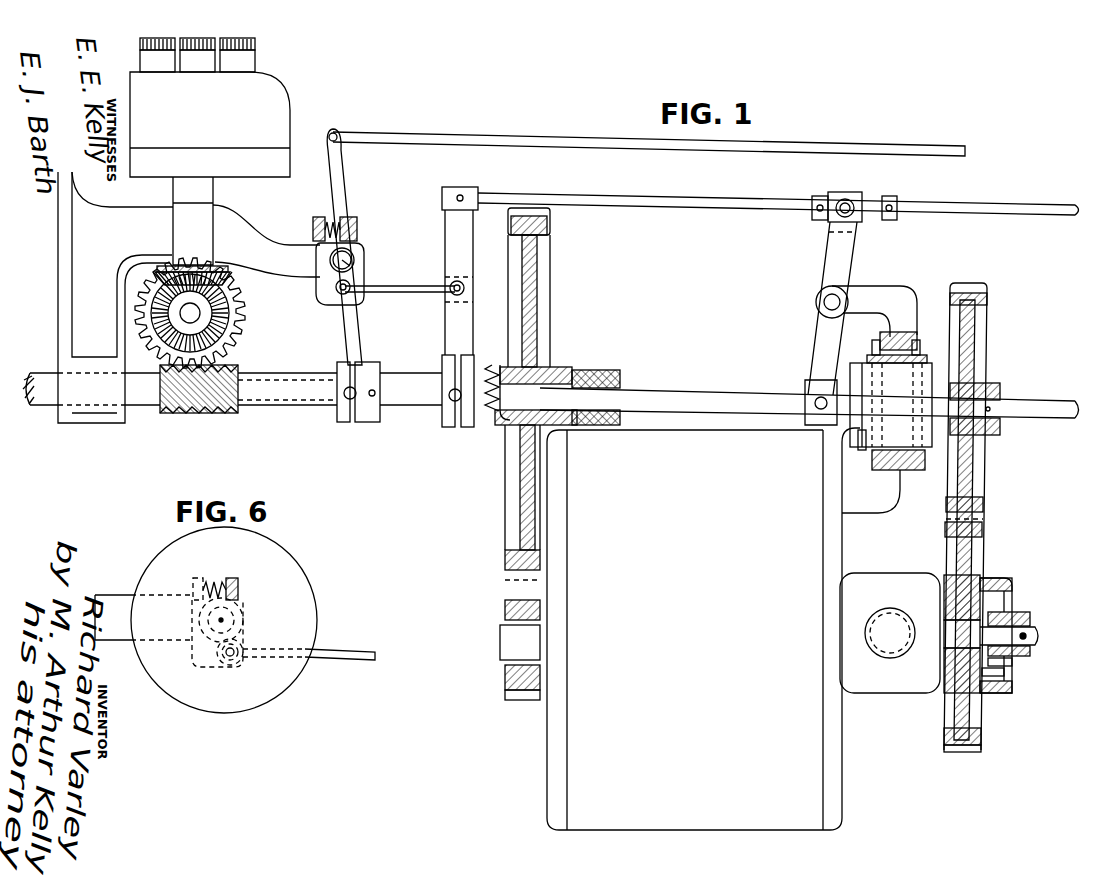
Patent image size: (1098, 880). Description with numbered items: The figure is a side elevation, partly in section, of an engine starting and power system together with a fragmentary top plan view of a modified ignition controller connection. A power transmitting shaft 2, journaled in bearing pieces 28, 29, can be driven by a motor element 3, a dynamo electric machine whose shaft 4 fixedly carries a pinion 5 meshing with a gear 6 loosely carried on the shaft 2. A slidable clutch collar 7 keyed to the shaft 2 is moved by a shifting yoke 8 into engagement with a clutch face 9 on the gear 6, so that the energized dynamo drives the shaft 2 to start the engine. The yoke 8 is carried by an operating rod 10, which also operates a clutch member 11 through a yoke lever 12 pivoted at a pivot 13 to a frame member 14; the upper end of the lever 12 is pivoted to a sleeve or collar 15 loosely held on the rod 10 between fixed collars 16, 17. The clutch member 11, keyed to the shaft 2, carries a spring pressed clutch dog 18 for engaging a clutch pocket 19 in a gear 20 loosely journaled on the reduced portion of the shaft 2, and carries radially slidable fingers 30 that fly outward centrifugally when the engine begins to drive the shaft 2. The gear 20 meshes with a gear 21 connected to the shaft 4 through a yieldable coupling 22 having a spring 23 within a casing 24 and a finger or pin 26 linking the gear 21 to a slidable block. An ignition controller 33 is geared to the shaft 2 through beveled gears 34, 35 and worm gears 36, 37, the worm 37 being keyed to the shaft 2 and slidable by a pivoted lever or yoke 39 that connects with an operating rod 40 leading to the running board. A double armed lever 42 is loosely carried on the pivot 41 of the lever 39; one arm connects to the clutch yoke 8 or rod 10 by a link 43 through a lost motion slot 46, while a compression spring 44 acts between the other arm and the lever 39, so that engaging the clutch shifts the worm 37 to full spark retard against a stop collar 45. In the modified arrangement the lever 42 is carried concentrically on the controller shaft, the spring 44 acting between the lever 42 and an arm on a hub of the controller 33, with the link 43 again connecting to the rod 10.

In FIG. 1, the power transmitting shaft 2 is at (40, 373).
In FIG. 1, the motor element 3 is at (547, 740).
In FIG. 1, the dynamo motor shaft 4 is at (952, 634).
In FIG. 1, the pinion 5 is at (996, 540).
In FIG. 1, the gear 6 is at (550, 330).
In FIG. 1, the slidable clutch collar 7 is at (473, 430).
In FIG. 1, the shifting yoke 8 is at (474, 254).
In FIG. 1, the clutch face 9 is at (505, 368).
In FIG. 1, the operating rod 10 is at (688, 206).
In FIG. 1, the clutch member 11 is at (848, 428).
In FIG. 1, the yoke lever 12 is at (828, 258).
In FIG. 1, the pivot 13 is at (822, 306).
In FIG. 1, the frame member 14 is at (908, 293).
In FIG. 1, the sleeve or collar 15 is at (855, 192).
In FIG. 1, the fixed collar 16 is at (818, 196).
In FIG. 1, the fixed collar 17 is at (898, 200).
In FIG. 1, the clutch dog 18 is at (935, 383).
In FIG. 1, the clutch pocket 19 is at (960, 382).
In FIG. 1, the gear 20 is at (988, 477).
In FIG. 1, the gear 21 is at (965, 559).
In FIG. 1, the yieldable coupling 22 is at (1010, 606).
In FIG. 1, the spring 23 is at (1013, 669).
In FIG. 1, the casing 24 is at (1032, 618).
In FIG. 1, the finger or pin 26 is at (990, 700).
In FIG. 1, the bearing piece 28 is at (601, 383).
In FIG. 1, the bearing piece 29 is at (110, 420).
In FIG. 1, the radially slidable fingers 30 is at (870, 350).
In FIG. 1, the ignition controller 33 is at (287, 101).
In FIG. 6, the ignition controller 33 is at (310, 594).
In FIG. 1, the beveled gear 34 is at (230, 284).
In FIG. 1, the beveled gear 35 is at (226, 313).
In FIG. 1, the worm gear 36 is at (232, 345).
In FIG. 1, the worm 37 is at (218, 415).
In FIG. 1, the pivoted lever or yoke 39 is at (362, 332).
In FIG. 1, the operating rod 40 is at (612, 142).
In FIG. 1, the pivot 41 is at (356, 250).
In FIG. 1, the double armed lever 42 is at (356, 262).
In FIG. 6, the double armed lever 42 is at (242, 605).
In FIG. 1, the link 43 is at (424, 296).
In FIG. 6, the link 43 is at (352, 648).
In FIG. 1, the compression spring 44 is at (348, 228).
In FIG. 6, the compression spring 44 is at (222, 582).
In FIG. 1, the stop collar 45 is at (358, 407).
In FIG. 1, the slot 46 is at (266, 241).
In FIG. 6, the slot 46 is at (215, 650).